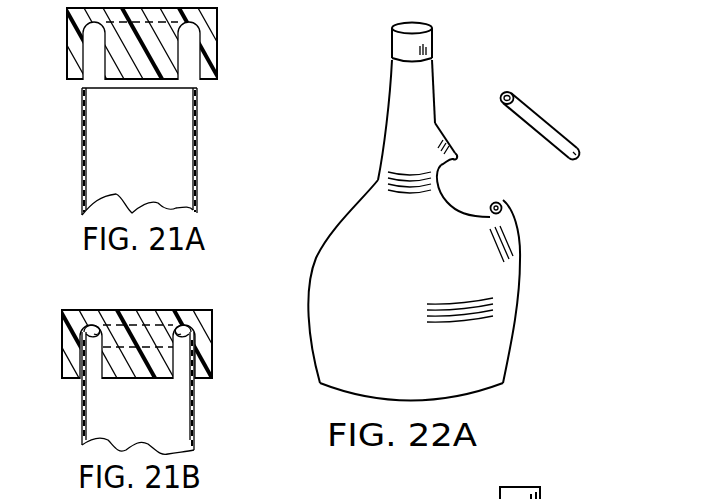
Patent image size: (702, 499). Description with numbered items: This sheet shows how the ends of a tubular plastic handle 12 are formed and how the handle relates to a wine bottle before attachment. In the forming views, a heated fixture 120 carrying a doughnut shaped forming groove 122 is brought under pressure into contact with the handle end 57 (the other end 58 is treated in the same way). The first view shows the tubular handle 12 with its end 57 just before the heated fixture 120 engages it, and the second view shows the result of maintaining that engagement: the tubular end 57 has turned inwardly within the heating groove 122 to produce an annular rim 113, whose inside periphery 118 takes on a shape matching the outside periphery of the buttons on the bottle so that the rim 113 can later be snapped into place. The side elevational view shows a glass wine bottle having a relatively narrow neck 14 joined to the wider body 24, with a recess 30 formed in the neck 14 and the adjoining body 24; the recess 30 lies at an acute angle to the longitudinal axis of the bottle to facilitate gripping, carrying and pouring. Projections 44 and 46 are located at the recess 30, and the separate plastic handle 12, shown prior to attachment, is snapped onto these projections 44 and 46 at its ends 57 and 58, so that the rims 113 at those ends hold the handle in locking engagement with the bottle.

In FIG. 21A, the handle 12 is at (198, 180).
In FIG. 21B, the handle 12 is at (138, 393).
In FIG. 22A, the handle 12 is at (538, 108).
In FIG. 22A, the neck 14 is at (444, 90).
In FIG. 22A, the body 24 is at (522, 284).
In FIG. 22A, the recess 30 is at (460, 190).
In FIG. 22A, the projection 44 is at (458, 160).
In FIG. 22A, the projection 46 is at (497, 202).
In FIG. 21A, the handle end 57 is at (198, 100).
In FIG. 22A, the handle end 57 is at (504, 92).
In FIG. 22A, the handle end 58 is at (578, 150).
In FIG. 21B, the annular rim 113 is at (90, 330).
In FIG. 21B, the inside periphery 118 is at (98, 330).
In FIG. 21A, the heated fixture 120 is at (217, 30).
In FIG. 21B, the heated fixture 120 is at (153, 310).
In FIG. 21A, the forming groove 122 is at (192, 72).
In FIG. 21B, the forming groove 122 is at (180, 376).